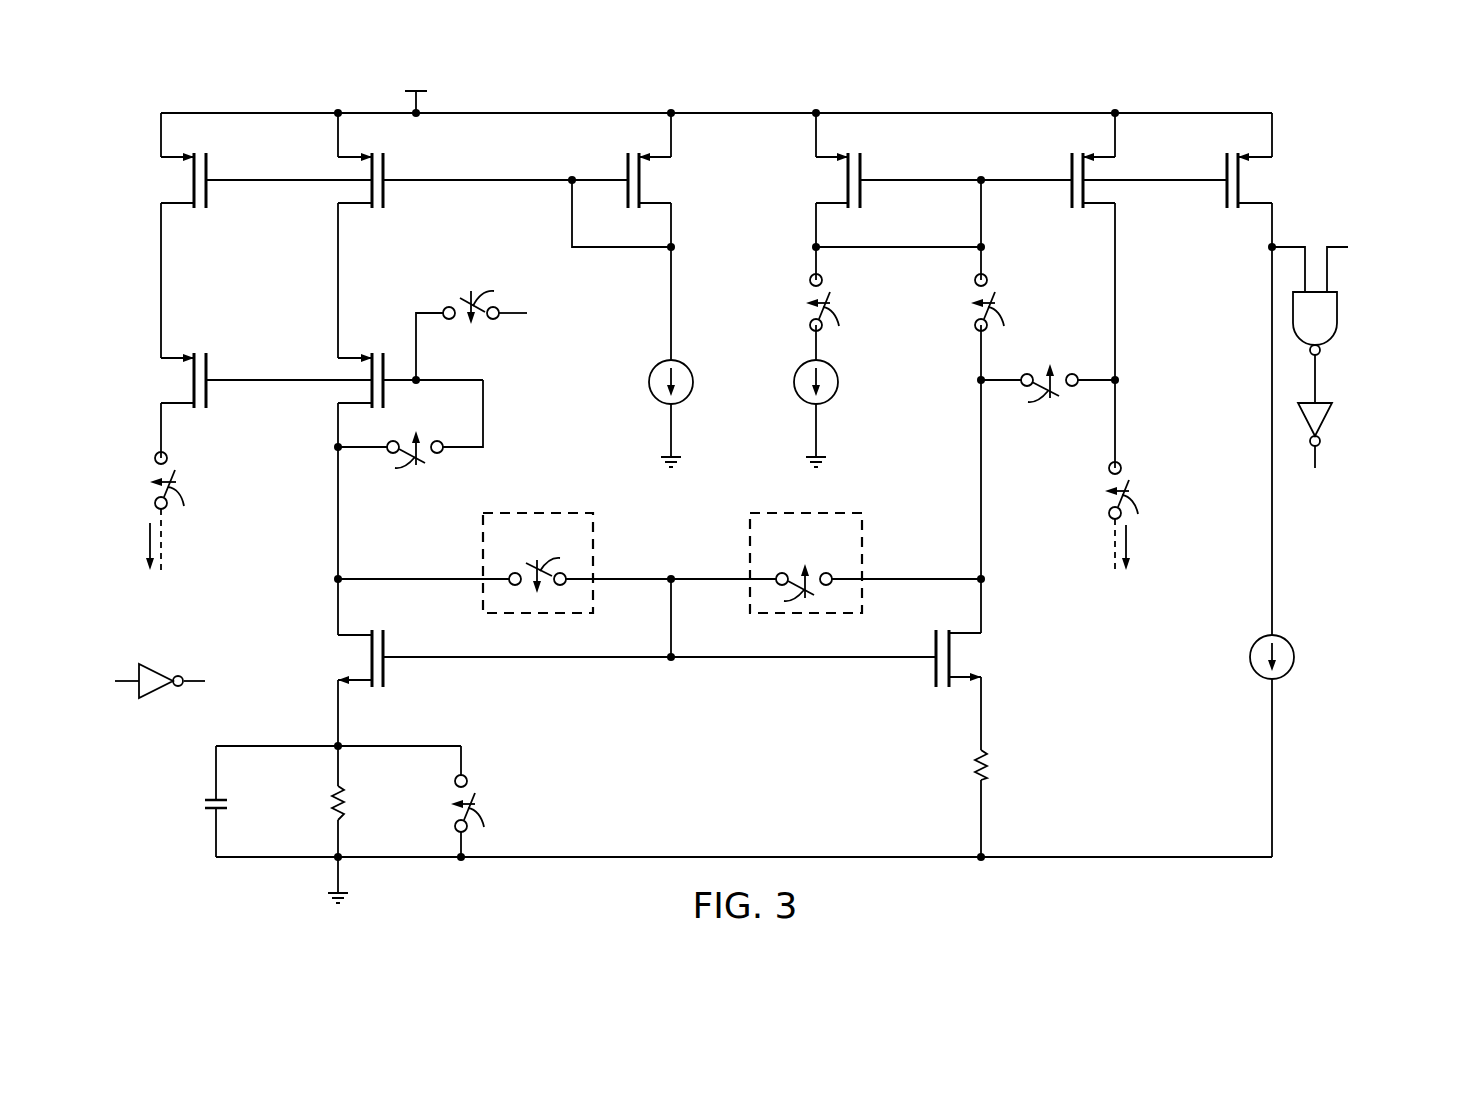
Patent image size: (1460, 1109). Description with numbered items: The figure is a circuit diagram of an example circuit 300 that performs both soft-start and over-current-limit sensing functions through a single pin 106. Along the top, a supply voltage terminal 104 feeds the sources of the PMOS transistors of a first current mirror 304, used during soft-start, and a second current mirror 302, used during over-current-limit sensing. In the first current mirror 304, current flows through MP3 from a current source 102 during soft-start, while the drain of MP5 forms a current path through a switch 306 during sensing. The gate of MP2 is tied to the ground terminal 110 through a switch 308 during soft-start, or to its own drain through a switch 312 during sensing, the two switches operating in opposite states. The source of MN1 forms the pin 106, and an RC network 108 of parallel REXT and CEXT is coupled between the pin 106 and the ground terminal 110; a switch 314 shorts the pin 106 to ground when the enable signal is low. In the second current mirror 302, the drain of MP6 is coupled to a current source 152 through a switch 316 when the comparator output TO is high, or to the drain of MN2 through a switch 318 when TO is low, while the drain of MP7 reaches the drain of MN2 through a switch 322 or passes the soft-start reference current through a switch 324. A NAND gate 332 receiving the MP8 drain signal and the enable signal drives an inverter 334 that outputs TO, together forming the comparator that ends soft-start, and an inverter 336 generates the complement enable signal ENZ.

The circuit 300 is at (1375, 82).
The second current mirror 302 is at (348, 78).
The first current mirror 304 is at (1071, 78).
The current source 102 is at (655, 362).
The supply voltage terminal 104 is at (738, 113).
The pin 106 is at (336, 745).
The RC network 108 is at (183, 840).
The ground terminal 110 is at (518, 319).
The current source 152 is at (808, 400).
The switch 306 is at (177, 480).
The switch 308 is at (466, 297).
The switch 312 is at (422, 468).
The switch 314 is at (476, 801).
The switch 316 is at (830, 300).
The switch 318 is at (995, 300).
The switch 322 is at (1060, 400).
The switch 324 is at (1132, 493).
The NAND gate 332 is at (1338, 318).
The inverter 334 is at (1324, 422).
The inverter 336 is at (150, 697).